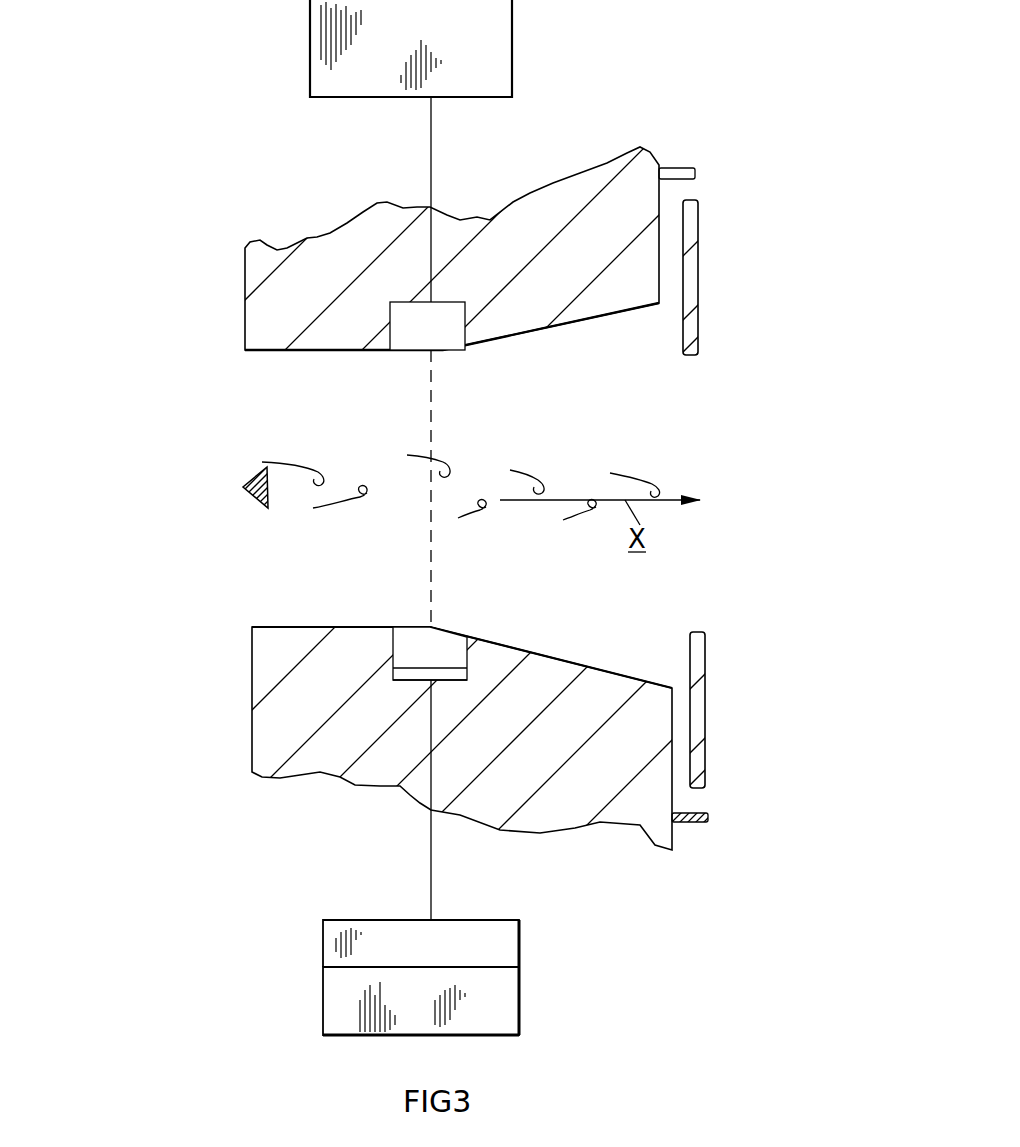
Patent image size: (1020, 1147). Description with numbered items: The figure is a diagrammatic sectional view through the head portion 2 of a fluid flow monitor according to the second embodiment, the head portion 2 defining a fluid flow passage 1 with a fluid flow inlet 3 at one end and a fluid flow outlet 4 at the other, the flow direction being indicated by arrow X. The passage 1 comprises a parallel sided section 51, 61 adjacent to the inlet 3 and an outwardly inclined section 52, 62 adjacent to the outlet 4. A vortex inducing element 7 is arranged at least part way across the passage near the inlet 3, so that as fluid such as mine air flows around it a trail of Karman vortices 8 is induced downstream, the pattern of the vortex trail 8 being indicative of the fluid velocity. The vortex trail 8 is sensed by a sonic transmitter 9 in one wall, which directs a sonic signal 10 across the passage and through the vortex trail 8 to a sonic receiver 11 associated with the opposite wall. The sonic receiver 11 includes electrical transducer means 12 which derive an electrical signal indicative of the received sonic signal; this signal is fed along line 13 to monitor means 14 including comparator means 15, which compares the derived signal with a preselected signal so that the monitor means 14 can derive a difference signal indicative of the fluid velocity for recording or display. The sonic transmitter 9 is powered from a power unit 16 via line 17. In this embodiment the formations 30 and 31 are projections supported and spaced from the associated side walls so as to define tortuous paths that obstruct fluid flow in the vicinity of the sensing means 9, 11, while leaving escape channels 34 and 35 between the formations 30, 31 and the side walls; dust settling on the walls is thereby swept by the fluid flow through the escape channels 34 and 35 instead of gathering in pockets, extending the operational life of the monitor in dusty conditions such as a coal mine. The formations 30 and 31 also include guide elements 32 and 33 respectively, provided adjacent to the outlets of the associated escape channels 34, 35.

The fluid flow passage 1 is at (263, 571).
The head portion 2 is at (457, 713).
The fluid flow inlet 3 is at (255, 427).
The fluid flow outlet 4 is at (685, 437).
The vortex inducing element 7 is at (245, 487).
The Karman vortex trail 8 is at (282, 517).
The sonic transmitter 9 is at (402, 327).
The sonic signal 10 is at (431, 387).
The sonic receiver 11 is at (403, 652).
The electrical transducer means 12 is at (413, 672).
The line 13 is at (431, 888).
The monitor means 14 is at (522, 1012).
The comparator means 15 is at (503, 942).
The power unit 16 is at (494, 42).
The line 17 is at (431, 135).
The formation 30 is at (695, 240).
The formation 31 is at (697, 690).
The guide element 32 is at (678, 172).
The guide element 33 is at (693, 822).
The escape channel 34 is at (672, 281).
The escape channel 35 is at (680, 749).
The parallel sided section 51 is at (295, 350).
The outwardly inclined section 52 is at (543, 330).
The parallel sided section 61 is at (353, 627).
The outwardly inclined section 62 is at (557, 657).